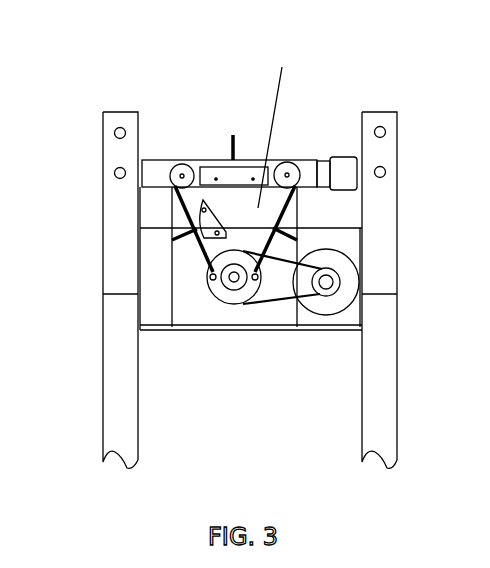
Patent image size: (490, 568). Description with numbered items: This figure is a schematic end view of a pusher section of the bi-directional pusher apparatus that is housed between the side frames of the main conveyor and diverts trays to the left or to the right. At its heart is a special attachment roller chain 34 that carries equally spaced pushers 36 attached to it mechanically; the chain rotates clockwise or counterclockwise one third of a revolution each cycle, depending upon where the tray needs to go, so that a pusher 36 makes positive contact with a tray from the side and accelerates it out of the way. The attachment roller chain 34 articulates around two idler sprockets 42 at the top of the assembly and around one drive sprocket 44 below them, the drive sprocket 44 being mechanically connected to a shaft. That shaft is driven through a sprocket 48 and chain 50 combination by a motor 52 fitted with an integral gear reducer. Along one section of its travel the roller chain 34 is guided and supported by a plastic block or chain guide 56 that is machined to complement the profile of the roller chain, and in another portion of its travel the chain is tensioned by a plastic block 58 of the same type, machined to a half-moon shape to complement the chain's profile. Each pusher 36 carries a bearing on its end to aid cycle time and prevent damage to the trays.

The attachment roller chain 34 is at (318, 157).
The pusher 36 is at (233, 135).
The idler sprocket 42 is at (181, 163).
The drive sprocket 44 is at (237, 283).
The sprocket 48 is at (238, 287).
The chain 50 is at (316, 268).
The motor 52 is at (335, 303).
The chain guide 56 is at (213, 168).
The plastic block 58 is at (198, 206).